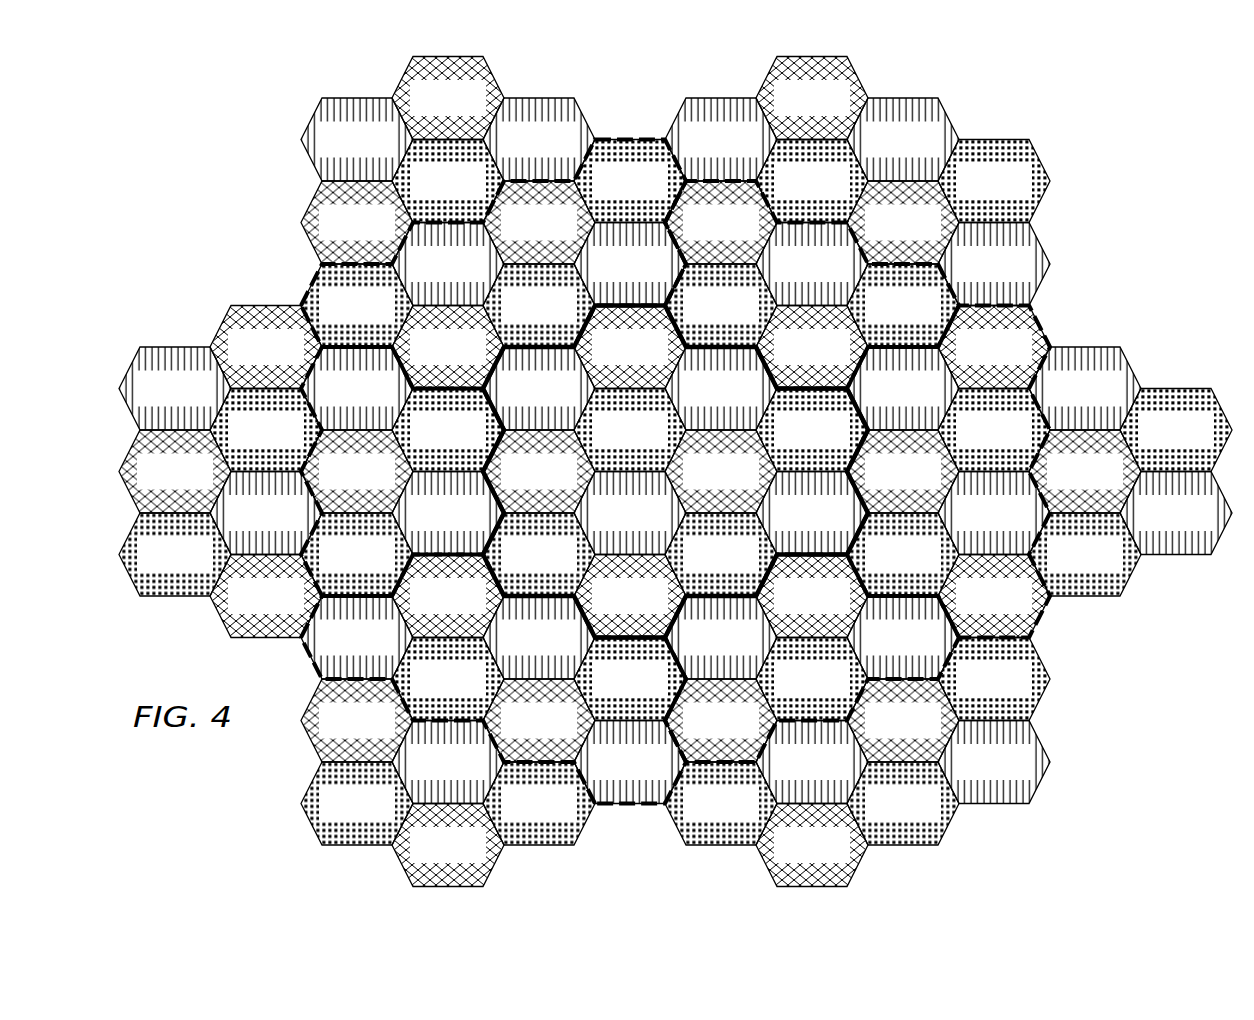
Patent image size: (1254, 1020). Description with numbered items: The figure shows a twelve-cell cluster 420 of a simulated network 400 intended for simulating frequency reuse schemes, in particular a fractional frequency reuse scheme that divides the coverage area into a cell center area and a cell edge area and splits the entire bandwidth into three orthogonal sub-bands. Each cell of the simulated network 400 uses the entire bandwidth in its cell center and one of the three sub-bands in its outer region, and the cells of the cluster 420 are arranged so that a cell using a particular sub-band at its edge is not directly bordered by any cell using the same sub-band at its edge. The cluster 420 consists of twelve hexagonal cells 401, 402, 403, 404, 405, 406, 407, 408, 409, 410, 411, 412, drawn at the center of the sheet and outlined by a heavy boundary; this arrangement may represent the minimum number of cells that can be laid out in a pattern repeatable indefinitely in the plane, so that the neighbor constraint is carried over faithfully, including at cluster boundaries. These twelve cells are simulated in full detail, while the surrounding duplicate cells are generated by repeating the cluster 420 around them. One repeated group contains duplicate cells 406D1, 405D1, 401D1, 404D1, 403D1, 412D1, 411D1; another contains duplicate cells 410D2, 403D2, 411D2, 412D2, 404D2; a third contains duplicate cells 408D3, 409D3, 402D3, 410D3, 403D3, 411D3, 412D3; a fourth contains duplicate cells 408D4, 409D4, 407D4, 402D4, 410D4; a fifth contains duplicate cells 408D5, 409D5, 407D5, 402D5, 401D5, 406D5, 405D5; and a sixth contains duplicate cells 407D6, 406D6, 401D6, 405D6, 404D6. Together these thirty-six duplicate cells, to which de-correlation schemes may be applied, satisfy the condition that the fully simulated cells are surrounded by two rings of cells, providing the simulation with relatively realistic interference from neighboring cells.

The simulated network 400 is at (1138, 208).
The cluster 420 is at (857, 392).
The cell 401 is at (702, 482).
The cell 402 is at (611, 440).
The cell 403 is at (611, 523).
The cell 404 is at (702, 564).
The cell 405 is at (793, 523).
The cell 406 is at (793, 440).
The cell 407 is at (702, 398).
The cell 408 is at (611, 357).
The cell 409 is at (520, 398).
The cell 410 is at (520, 482).
The cell 411 is at (520, 564).
The cell 412 is at (611, 606).
The duplicate cell 401D1 is at (507, 232).
The duplicate cell 403D1 is at (416, 274).
The duplicate cell 404D1 is at (507, 316).
The duplicate cell 405D1 is at (598, 274).
The duplicate cell 406D1 is at (598, 191).
The duplicate cell 411D1 is at (325, 316).
The duplicate cell 412D1 is at (416, 357).
The duplicate cell 403D2 is at (780, 274).
The duplicate cell 404D2 is at (871, 316).
The duplicate cell 410D2 is at (689, 232).
The duplicate cell 411D2 is at (689, 316).
The duplicate cell 412D2 is at (780, 357).
The duplicate cell 402D3 is at (962, 440).
The duplicate cell 403D3 is at (962, 523).
The duplicate cell 408D3 is at (962, 357).
The duplicate cell 409D3 is at (871, 398).
The duplicate cell 410D3 is at (871, 482).
The duplicate cell 411D3 is at (871, 564).
The duplicate cell 412D3 is at (962, 606).
The duplicate cell 402D4 is at (780, 689).
The duplicate cell 407D4 is at (871, 648).
The duplicate cell 408D4 is at (780, 606).
The duplicate cell 409D4 is at (689, 648).
The duplicate cell 410D4 is at (689, 730).
The duplicate cell 401D5 is at (507, 730).
The duplicate cell 402D5 is at (416, 689).
The duplicate cell 405D5 is at (598, 772).
The duplicate cell 406D5 is at (598, 689).
The duplicate cell 407D5 is at (507, 648).
The duplicate cell 408D5 is at (416, 606).
The duplicate cell 409D5 is at (325, 648).
The duplicate cell 401D6 is at (325, 482).
The duplicate cell 404D6 is at (325, 564).
The duplicate cell 405D6 is at (416, 523).
The duplicate cell 406D6 is at (416, 440).
The duplicate cell 407D6 is at (325, 398).